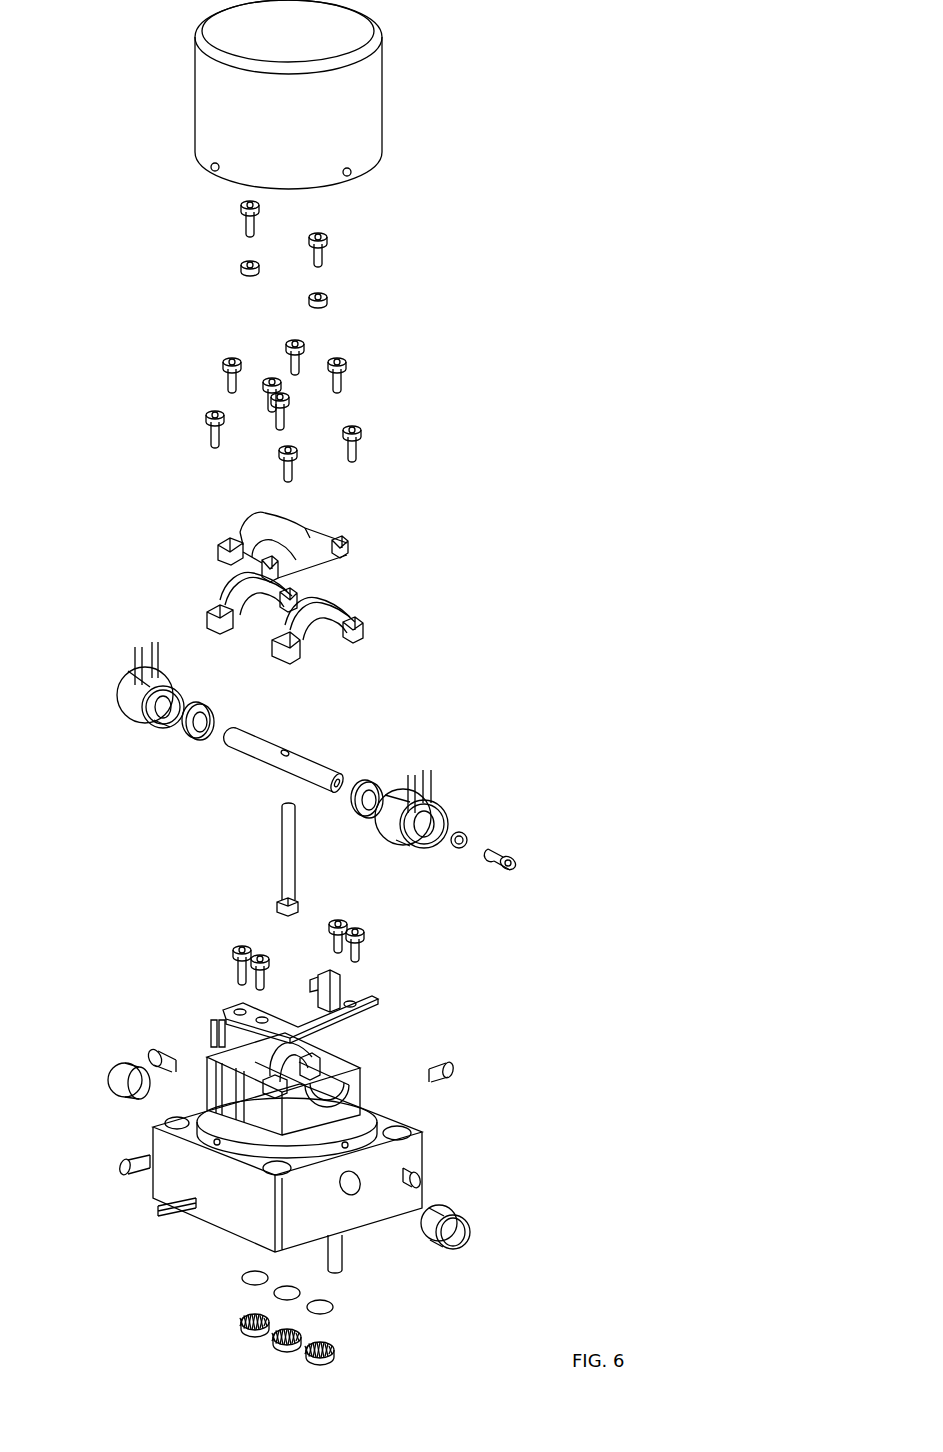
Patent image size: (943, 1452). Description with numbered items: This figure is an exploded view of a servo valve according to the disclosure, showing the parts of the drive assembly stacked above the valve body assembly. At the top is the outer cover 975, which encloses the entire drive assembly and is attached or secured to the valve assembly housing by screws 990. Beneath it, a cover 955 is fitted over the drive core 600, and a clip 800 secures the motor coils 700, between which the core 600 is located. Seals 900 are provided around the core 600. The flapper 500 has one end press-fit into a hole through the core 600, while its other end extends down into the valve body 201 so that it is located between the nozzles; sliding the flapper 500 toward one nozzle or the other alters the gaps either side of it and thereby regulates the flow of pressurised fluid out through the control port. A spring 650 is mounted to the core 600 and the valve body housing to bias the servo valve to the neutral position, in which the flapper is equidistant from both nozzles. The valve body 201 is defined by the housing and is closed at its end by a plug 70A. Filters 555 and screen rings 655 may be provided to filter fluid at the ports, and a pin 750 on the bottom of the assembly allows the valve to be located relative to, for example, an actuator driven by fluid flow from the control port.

The outer cover 975 is at (373, 98).
The screws 990 is at (352, 377).
The cover 955 is at (255, 535).
The clip 800 is at (342, 618).
The seals 900 is at (187, 738).
The drive core 600 is at (318, 763).
The motor coils 700 is at (447, 805).
The flapper 500 is at (287, 865).
The spring 650 is at (375, 997).
The valve body 201 is at (413, 1150).
The pin 750 is at (343, 1262).
The plug 70A is at (471, 1232).
The filters 555 is at (243, 1278).
The screen rings 655 is at (245, 1328).